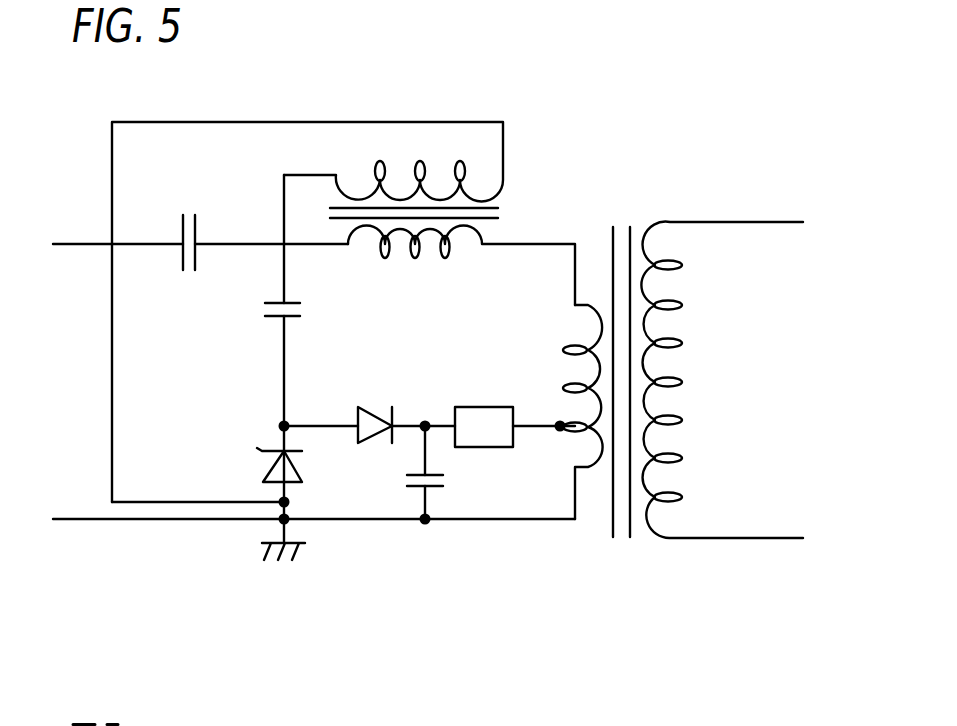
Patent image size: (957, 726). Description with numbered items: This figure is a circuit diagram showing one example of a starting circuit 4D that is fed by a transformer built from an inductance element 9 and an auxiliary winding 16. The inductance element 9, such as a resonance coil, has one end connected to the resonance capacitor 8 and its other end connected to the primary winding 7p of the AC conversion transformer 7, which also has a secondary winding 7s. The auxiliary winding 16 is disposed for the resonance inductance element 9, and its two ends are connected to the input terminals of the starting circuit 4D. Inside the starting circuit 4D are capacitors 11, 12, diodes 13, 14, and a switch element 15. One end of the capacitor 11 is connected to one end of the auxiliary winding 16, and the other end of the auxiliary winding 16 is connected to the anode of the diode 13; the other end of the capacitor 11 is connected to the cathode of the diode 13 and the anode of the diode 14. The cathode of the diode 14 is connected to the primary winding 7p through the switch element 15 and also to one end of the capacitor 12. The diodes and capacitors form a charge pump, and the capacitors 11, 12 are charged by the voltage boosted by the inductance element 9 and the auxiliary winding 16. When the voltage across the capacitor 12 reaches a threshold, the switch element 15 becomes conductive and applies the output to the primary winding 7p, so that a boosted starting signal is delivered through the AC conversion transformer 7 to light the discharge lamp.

The starting circuit 4D is at (507, 537).
The AC conversion transformer 7 is at (572, 172).
The primary winding 7p is at (593, 307).
The secondary winding 7s is at (647, 232).
The resonance capacitor 8 is at (197, 223).
The inductance element 9 is at (410, 244).
The capacitor 11 is at (270, 318).
The capacitor 12 is at (418, 488).
The diode 13 is at (267, 470).
The diode 14 is at (370, 415).
The switch element 15 is at (485, 408).
The auxiliary winding 16 is at (498, 200).